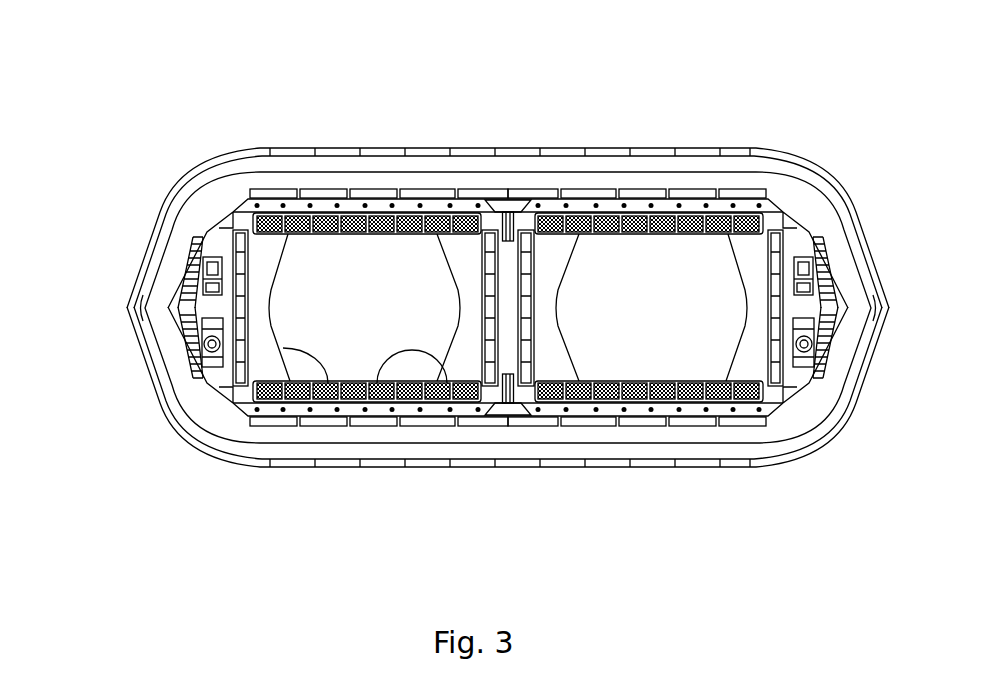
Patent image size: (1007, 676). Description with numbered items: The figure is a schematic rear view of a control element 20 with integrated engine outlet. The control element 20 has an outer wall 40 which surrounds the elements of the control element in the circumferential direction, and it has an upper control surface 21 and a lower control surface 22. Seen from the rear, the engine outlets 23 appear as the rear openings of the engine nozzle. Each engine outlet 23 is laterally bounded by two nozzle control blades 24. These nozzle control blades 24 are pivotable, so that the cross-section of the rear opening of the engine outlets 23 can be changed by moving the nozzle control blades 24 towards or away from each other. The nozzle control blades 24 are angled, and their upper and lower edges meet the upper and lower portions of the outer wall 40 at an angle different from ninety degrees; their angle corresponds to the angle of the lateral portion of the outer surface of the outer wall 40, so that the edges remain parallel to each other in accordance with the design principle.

The control element 20 is at (187, 128).
The upper control surface 21 is at (512, 143).
The lower control surface 22 is at (517, 473).
The engine outlet 23 is at (368, 268).
The nozzle control blade 24 is at (328, 383).
The outer wall 40 is at (797, 197).